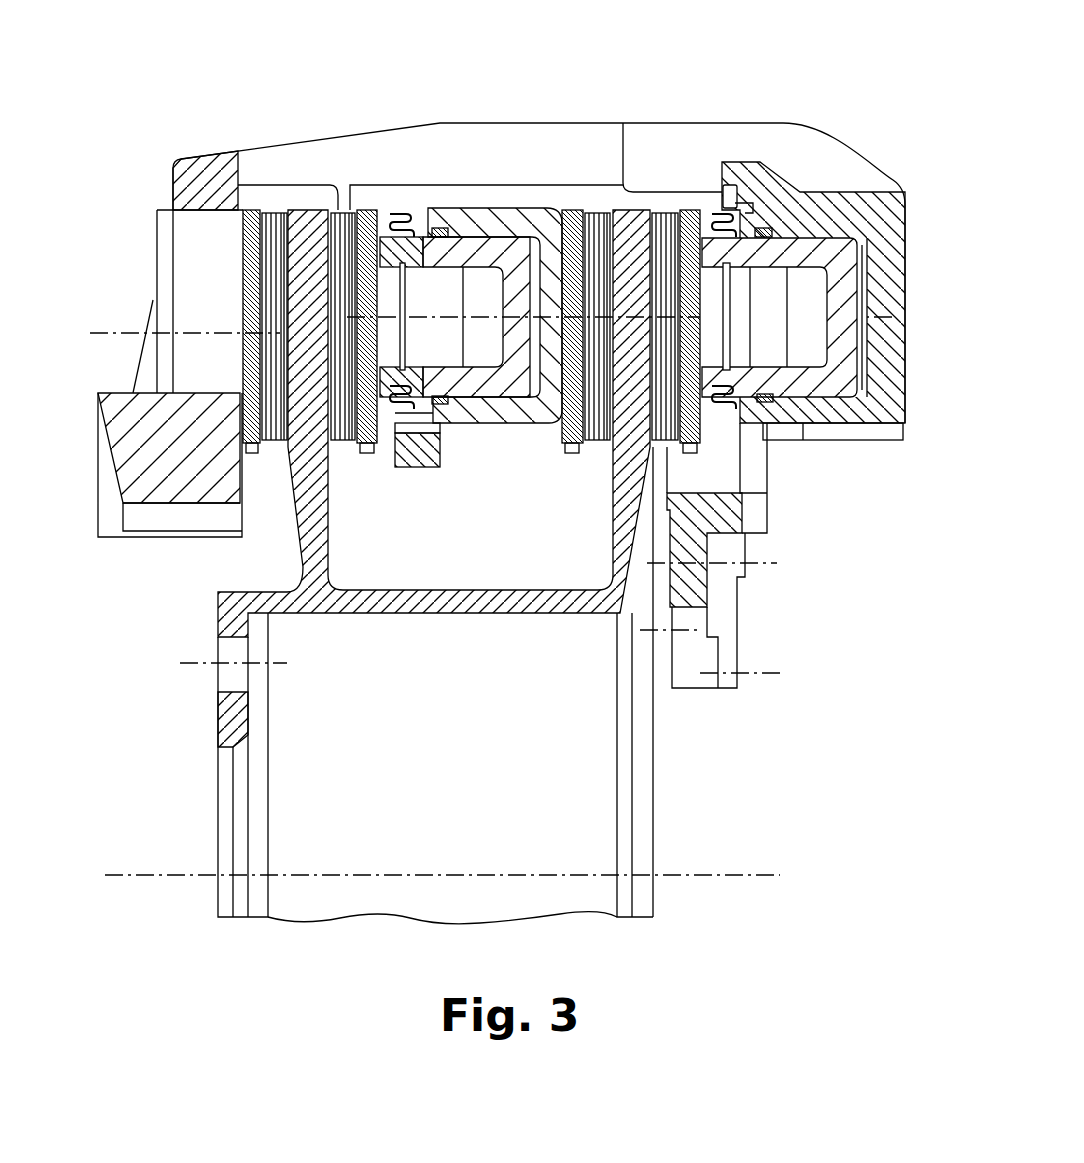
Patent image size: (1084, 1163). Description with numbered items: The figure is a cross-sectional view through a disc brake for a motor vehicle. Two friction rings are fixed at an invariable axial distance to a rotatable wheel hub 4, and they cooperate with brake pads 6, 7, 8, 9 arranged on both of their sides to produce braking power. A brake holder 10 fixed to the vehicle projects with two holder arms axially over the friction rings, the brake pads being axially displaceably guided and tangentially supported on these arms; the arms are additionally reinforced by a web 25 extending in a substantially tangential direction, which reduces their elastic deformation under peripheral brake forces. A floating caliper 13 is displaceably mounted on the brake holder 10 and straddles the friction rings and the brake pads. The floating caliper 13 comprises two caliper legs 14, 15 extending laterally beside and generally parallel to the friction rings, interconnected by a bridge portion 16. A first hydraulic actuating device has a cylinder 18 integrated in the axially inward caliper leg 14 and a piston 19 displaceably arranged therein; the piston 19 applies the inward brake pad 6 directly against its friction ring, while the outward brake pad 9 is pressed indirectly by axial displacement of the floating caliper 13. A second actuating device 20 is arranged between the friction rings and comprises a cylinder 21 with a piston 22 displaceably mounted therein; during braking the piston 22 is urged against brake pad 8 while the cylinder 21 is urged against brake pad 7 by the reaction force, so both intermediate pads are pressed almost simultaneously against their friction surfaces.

The wheel hub 4 is at (238, 605).
The brake pad 6 is at (692, 430).
The brake pad 7 is at (597, 447).
The brake pad 8 is at (342, 447).
The brake pad 9 is at (253, 250).
The brake holder 10 is at (722, 615).
The floating caliper 13 is at (706, 108).
The caliper leg 14 is at (845, 203).
The caliper leg 15 is at (187, 318).
The bridge portion 16 is at (522, 150).
The cylinder 18 is at (833, 392).
The piston 19 is at (843, 275).
The second actuating device 20 is at (552, 195).
The cylinder 21 is at (547, 223).
The piston 22 is at (460, 253).
The web 25 is at (417, 450).